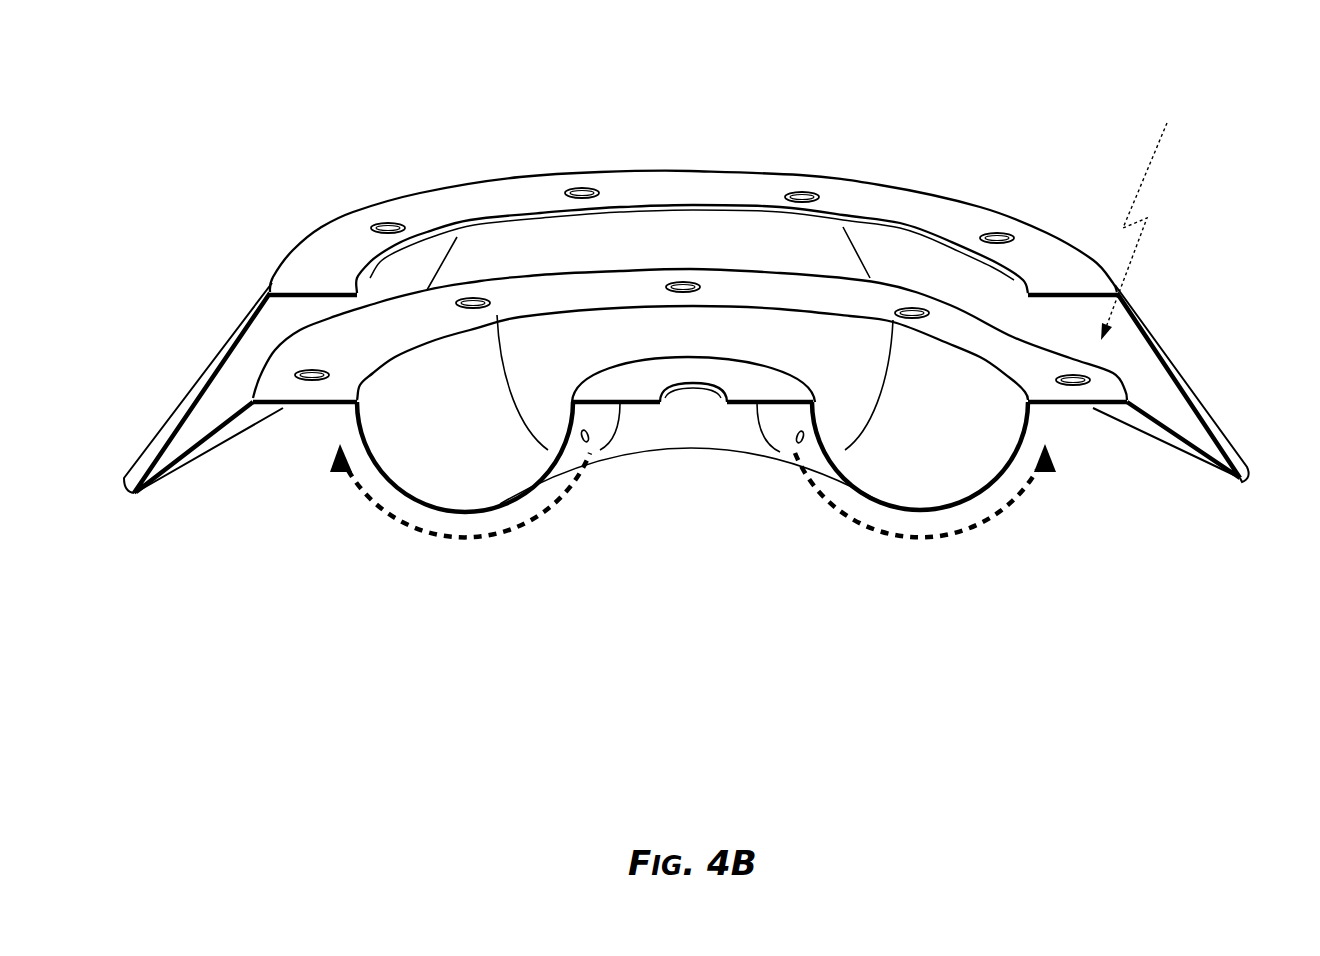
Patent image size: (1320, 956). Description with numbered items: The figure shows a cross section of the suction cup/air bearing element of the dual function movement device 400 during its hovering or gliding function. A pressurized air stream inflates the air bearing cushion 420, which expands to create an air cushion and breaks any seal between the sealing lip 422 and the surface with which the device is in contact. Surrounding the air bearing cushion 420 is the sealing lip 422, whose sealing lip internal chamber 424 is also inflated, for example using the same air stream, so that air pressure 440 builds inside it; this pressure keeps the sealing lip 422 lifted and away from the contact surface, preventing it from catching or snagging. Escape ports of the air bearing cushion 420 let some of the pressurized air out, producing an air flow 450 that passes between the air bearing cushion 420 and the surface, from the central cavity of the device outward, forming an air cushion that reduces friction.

The dual function movement device 400 is at (426, 124).
The air bearing cushion 420 is at (960, 442).
The sealing lip 422 is at (143, 497).
The sealing lip internal chamber 424 is at (257, 348).
The air pressure 440 is at (1151, 114).
The air flow 450 is at (810, 493).